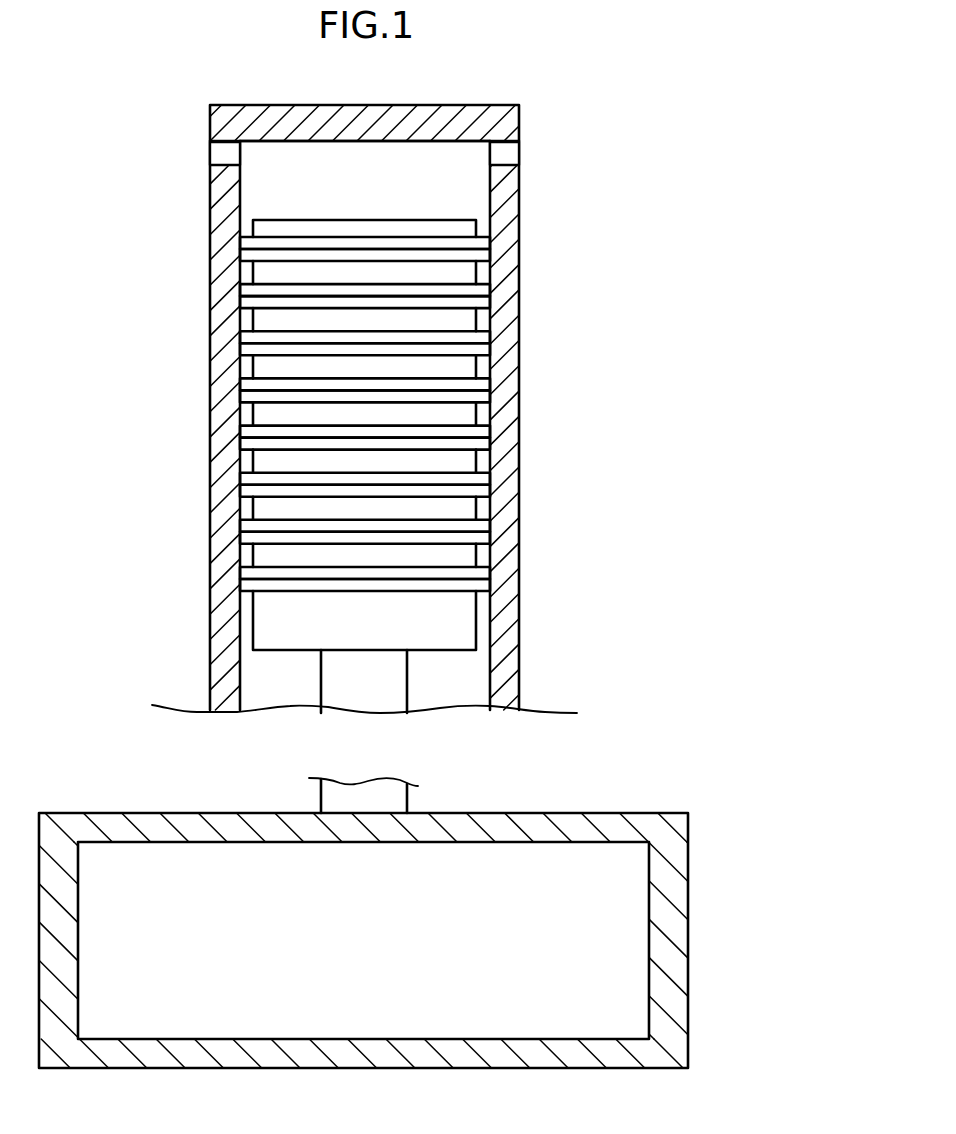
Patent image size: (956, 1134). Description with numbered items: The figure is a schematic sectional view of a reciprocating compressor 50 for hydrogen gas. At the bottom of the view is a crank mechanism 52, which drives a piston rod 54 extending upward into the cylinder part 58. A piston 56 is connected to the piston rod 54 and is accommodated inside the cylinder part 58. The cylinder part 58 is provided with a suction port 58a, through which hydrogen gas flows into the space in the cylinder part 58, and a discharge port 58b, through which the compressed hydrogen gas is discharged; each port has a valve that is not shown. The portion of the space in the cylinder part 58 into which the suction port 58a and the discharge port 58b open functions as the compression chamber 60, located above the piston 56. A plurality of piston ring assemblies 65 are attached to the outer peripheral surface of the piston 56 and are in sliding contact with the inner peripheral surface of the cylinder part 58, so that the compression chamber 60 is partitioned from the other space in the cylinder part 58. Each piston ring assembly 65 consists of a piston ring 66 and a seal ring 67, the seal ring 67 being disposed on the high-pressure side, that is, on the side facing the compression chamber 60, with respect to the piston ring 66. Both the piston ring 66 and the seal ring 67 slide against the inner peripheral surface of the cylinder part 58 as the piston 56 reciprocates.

The reciprocating compressor 50 is at (660, 116).
The crank mechanism 52 is at (688, 812).
The piston rod 54 is at (340, 682).
The piston 56 is at (292, 219).
The cylinder part 58 is at (520, 430).
The suction port 58a is at (210, 152).
The discharge port 58b is at (520, 150).
The compression chamber 60 is at (457, 202).
The piston ring assembly 65 is at (131, 214).
The piston ring 66 is at (244, 253).
The seal ring 67 is at (244, 242).